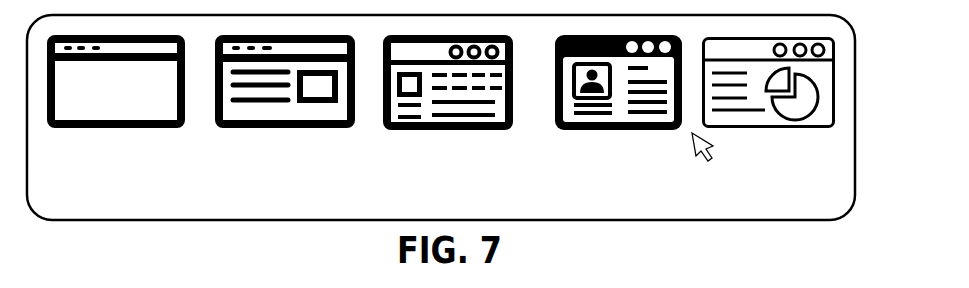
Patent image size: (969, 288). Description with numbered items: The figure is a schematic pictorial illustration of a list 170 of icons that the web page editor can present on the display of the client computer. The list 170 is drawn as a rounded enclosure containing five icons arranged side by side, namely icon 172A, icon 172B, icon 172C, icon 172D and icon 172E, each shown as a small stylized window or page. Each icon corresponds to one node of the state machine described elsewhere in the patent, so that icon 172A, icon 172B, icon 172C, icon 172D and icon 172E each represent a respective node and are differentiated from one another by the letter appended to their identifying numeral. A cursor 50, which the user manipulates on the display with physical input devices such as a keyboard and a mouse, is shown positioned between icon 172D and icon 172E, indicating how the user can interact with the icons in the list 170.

The list of icons 170 is at (842, 218).
The icon 172A is at (125, 128).
The icon 172B is at (292, 128).
The icon 172C is at (442, 130).
The icon 172D is at (615, 130).
The icon 172E is at (782, 128).
The cursor 50 is at (712, 162).